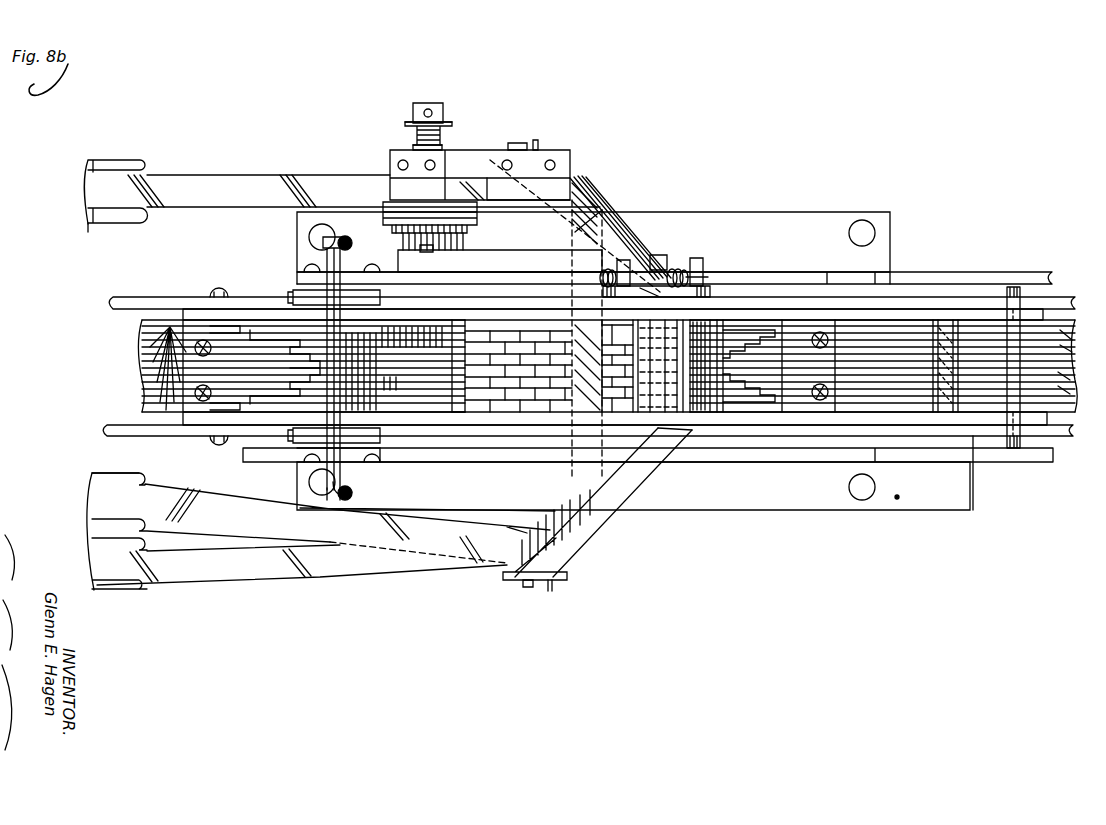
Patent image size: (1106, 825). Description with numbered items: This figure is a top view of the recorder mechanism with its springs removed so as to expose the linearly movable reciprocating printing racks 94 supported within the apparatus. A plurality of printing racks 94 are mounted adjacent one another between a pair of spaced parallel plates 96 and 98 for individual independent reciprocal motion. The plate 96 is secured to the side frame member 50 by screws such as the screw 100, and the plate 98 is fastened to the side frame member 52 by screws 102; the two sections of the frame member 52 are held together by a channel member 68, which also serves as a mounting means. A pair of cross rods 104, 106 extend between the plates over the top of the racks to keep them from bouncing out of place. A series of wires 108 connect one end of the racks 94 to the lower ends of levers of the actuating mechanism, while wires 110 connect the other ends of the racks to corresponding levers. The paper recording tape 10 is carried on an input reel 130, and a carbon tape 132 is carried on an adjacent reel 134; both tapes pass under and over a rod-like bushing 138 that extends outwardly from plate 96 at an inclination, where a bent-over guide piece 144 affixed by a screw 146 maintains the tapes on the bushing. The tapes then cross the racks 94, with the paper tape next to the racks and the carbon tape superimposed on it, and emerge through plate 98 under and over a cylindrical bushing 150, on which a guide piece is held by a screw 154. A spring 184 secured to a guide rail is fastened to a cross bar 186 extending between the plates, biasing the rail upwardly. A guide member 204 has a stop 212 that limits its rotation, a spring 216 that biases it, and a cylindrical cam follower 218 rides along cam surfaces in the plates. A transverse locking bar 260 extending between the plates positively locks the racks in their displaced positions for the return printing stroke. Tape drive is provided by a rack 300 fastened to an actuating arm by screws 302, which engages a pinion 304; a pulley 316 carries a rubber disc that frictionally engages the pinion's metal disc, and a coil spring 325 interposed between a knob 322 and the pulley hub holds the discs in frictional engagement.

The paper recording tape 10 is at (262, 186).
The side frame member 50 is at (148, 438).
The side frame member 52 is at (168, 286).
The channel member 68 is at (832, 222).
The printing racks 94 is at (510, 330).
The side plate 96 is at (836, 418).
The side plate 98 is at (857, 313).
The screw 100 is at (226, 446).
The screws 102 is at (230, 290).
The cross rod 104 is at (458, 414).
The cross rod 106 is at (714, 408).
The wires 108 is at (1062, 340).
The wires 110 is at (162, 358).
The input reel 130 is at (150, 478).
The carbon tape 132 is at (262, 512).
The reel 134 is at (146, 588).
The rod-like bushing 138 is at (105, 222).
The bent-over guide piece 144 is at (615, 490).
The screw 146 is at (550, 590).
The cylindrical bushing 150 is at (608, 213).
The screw 154 is at (515, 146).
The spring 184 is at (338, 244).
The cross bar 186 is at (300, 292).
The guide member 204 is at (712, 292).
The stop 212 is at (703, 276).
The spring 216 is at (696, 258).
The cam follower 218 is at (660, 396).
The transverse locking bar 260 is at (382, 345).
The rack 300 is at (538, 262).
The screws 302 is at (430, 250).
The pinion 304 is at (400, 242).
The pulley 316 is at (383, 208).
The knob 322 is at (446, 111).
The coil spring 325 is at (405, 135).